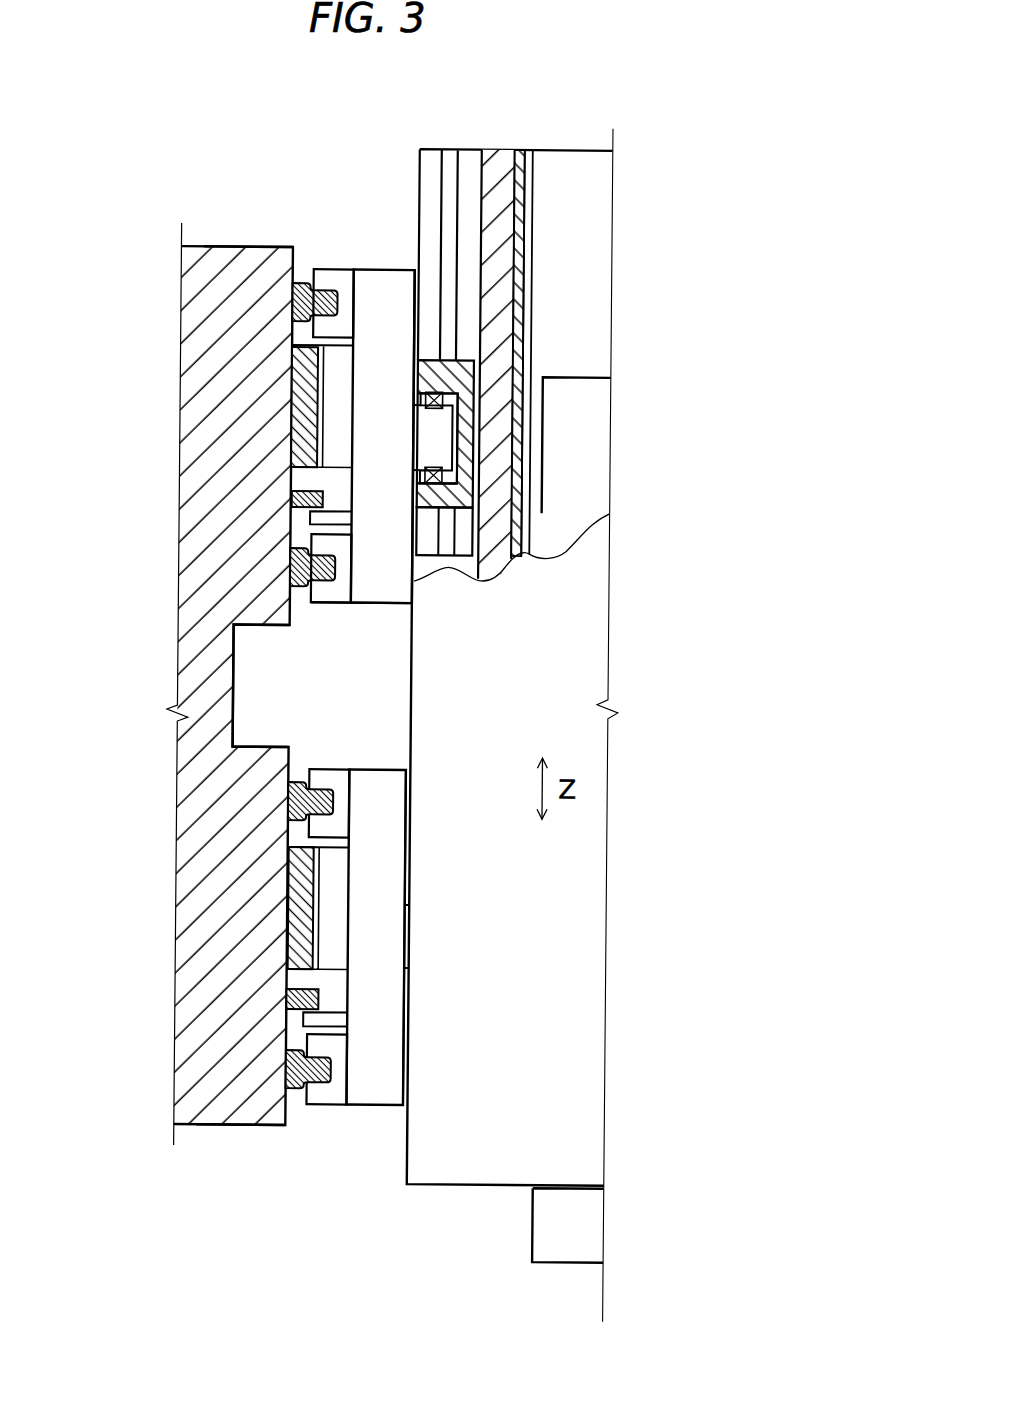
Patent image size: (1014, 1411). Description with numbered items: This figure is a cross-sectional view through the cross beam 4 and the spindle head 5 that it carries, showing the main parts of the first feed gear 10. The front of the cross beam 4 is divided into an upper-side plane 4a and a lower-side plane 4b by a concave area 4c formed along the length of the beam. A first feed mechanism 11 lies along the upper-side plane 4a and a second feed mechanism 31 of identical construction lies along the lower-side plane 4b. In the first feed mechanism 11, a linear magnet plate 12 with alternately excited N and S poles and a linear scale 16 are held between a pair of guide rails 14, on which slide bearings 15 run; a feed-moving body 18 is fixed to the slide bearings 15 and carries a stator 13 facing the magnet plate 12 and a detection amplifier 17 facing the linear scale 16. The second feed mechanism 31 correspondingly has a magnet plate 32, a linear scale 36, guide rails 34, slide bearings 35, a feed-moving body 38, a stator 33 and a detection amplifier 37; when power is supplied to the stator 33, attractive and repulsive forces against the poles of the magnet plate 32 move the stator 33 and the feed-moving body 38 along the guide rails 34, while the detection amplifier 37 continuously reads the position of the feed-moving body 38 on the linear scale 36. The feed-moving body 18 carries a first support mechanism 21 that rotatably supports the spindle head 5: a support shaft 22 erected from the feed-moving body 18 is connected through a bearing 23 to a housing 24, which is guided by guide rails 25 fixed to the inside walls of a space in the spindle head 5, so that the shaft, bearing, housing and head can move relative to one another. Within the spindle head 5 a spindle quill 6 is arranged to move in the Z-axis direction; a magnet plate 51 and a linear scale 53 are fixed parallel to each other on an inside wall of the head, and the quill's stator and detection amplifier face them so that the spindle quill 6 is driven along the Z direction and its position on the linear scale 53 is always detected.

The cross beam 4 is at (187, 687).
The upper-side plane 4a is at (309, 255).
The lower-side plane 4b is at (290, 1117).
The concave area 4c is at (233, 683).
The spindle head 5 is at (600, 652).
The spindle quill 6 is at (602, 453).
The first feed gear 10 is at (230, 122).
The first feed mechanism 11 is at (373, 236).
The linear magnet plate 12 is at (298, 430).
The stator 13 is at (327, 373).
The guide rails 14 is at (300, 303).
The slide bearings 15 is at (330, 270).
The linear scale 16 is at (298, 498).
The detection amplifier 17 is at (310, 520).
The feed-moving body 18 is at (403, 588).
The first support mechanism 21 is at (464, 512).
The support shaft 22 is at (417, 427).
The bearing 23 is at (415, 373).
The housing 24 is at (419, 492).
The guide rails 25 is at (443, 158).
The second feed mechanism 31 is at (351, 1135).
The magnet plate 32 is at (298, 932).
The stator 33 is at (320, 873).
The guide rails 34 is at (292, 797).
The slide bearings 35 is at (342, 770).
The linear scale 36 is at (296, 995).
The detection amplifier 37 is at (306, 1019).
The feed-moving body 38 is at (401, 862).
The magnet plate 51 is at (522, 149).
The linear scale 53 is at (528, 226).